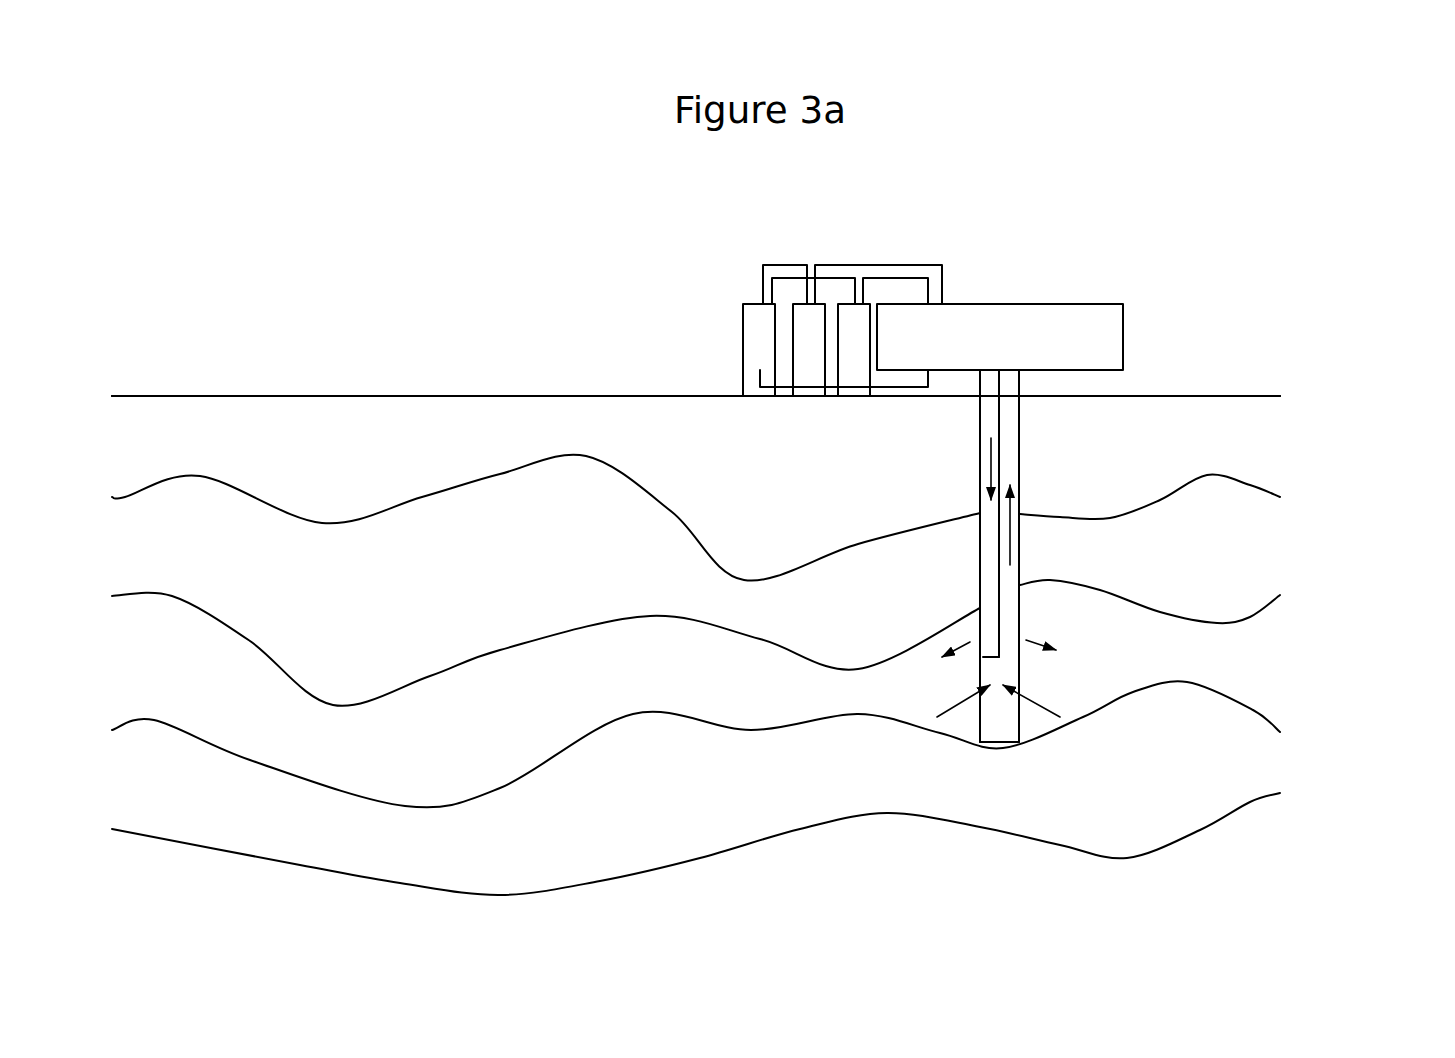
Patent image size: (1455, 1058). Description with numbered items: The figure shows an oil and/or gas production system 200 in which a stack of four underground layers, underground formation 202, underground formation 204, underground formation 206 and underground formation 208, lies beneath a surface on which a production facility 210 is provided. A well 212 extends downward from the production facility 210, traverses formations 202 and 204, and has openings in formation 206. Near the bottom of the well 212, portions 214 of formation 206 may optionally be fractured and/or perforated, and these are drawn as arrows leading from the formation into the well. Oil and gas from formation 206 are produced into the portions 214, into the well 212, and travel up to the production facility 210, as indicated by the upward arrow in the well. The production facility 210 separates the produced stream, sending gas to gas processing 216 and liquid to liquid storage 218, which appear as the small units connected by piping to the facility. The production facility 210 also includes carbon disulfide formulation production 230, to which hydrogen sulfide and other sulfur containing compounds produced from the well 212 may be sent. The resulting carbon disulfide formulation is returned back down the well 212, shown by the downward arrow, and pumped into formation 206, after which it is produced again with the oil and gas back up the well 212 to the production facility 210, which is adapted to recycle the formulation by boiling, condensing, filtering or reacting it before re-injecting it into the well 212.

The system 200 is at (566, 328).
The underground formation 202 is at (546, 515).
The underground formation 204 is at (1150, 549).
The underground formation 206 is at (696, 700).
The underground formation 208 is at (696, 810).
The production facility 210 is at (979, 351).
The well 212 is at (1020, 430).
The portions of formation 214 is at (947, 678).
The gas processing 216 is at (852, 332).
The liquid storage 218 is at (813, 332).
The carbon disulfide formulation production 230 is at (760, 322).